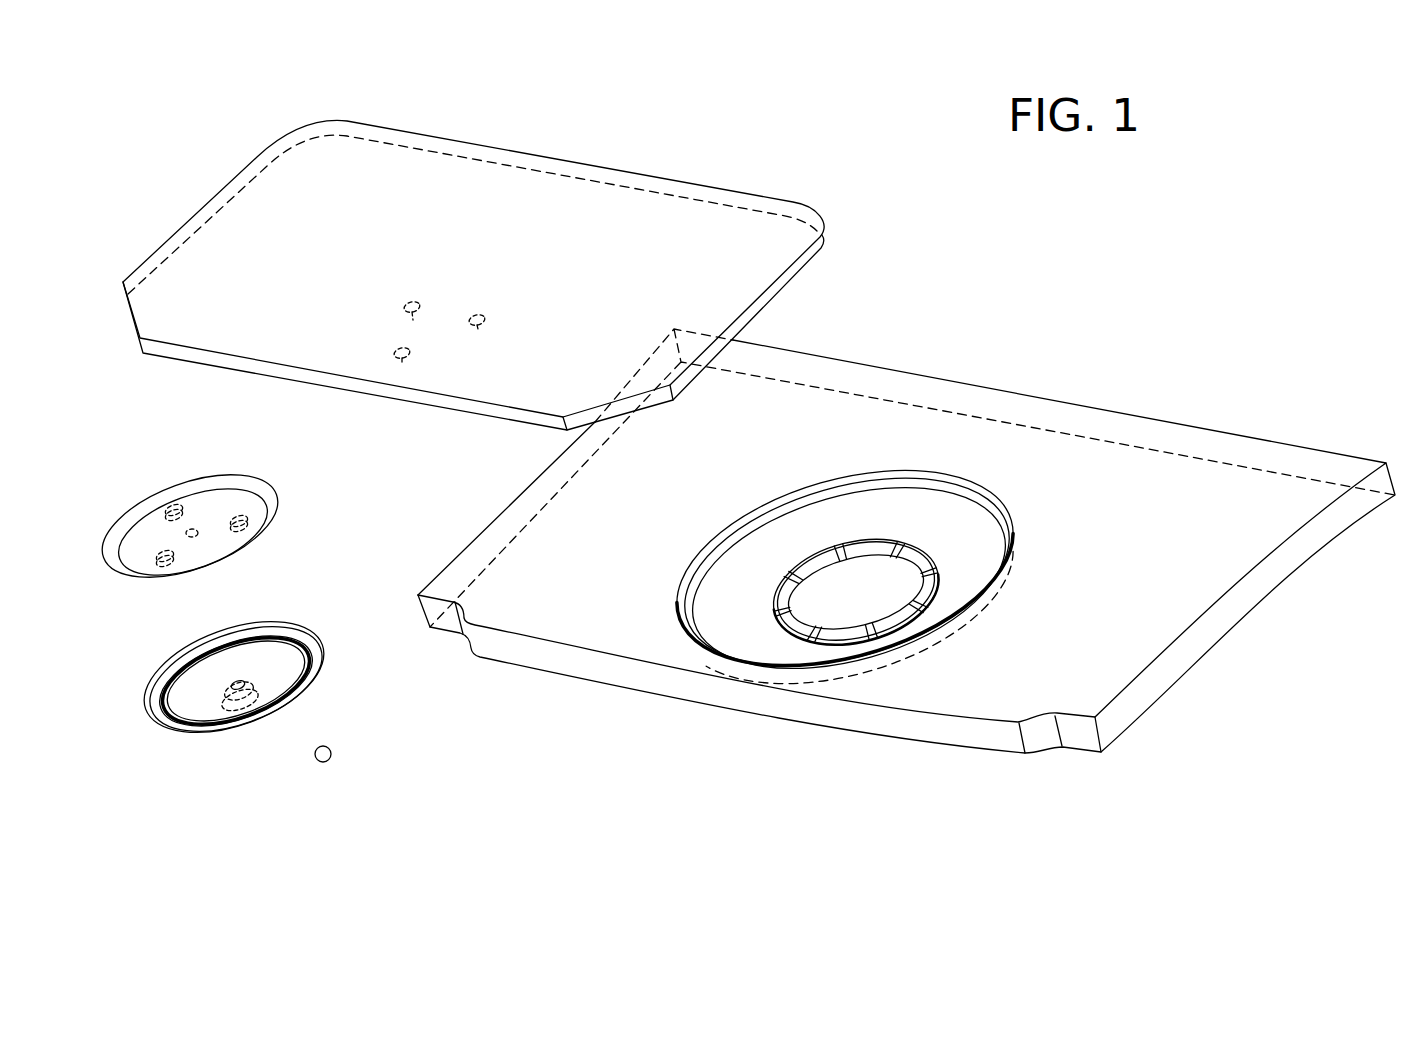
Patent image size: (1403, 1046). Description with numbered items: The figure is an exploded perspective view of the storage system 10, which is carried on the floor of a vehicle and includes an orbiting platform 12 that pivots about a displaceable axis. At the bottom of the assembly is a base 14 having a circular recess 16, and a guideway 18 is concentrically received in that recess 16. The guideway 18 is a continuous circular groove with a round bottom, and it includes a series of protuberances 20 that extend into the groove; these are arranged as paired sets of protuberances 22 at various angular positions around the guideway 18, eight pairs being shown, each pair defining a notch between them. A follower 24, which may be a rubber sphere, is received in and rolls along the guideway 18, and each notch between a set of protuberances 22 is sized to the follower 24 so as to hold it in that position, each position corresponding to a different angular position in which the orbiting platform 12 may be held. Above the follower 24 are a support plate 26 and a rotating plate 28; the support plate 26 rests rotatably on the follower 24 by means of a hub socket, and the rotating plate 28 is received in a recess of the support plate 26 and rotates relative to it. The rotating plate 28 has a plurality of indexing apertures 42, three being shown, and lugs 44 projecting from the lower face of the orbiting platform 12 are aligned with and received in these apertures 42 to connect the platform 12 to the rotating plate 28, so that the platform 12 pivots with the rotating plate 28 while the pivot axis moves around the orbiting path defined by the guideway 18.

The storage system 10 is at (1160, 277).
The orbiting platform 12 is at (571, 207).
The base 14 is at (1110, 658).
The circular recess 16 is at (684, 624).
The guideway 18 is at (930, 565).
The protuberances 20 is at (933, 563).
The paired sets of protuberances 22 is at (845, 548).
The follower 24 is at (329, 762).
The support plate 26 is at (200, 733).
The rotating plate 28 is at (240, 556).
The indexing apertures 42 is at (228, 508).
The lugs 44 is at (413, 320).